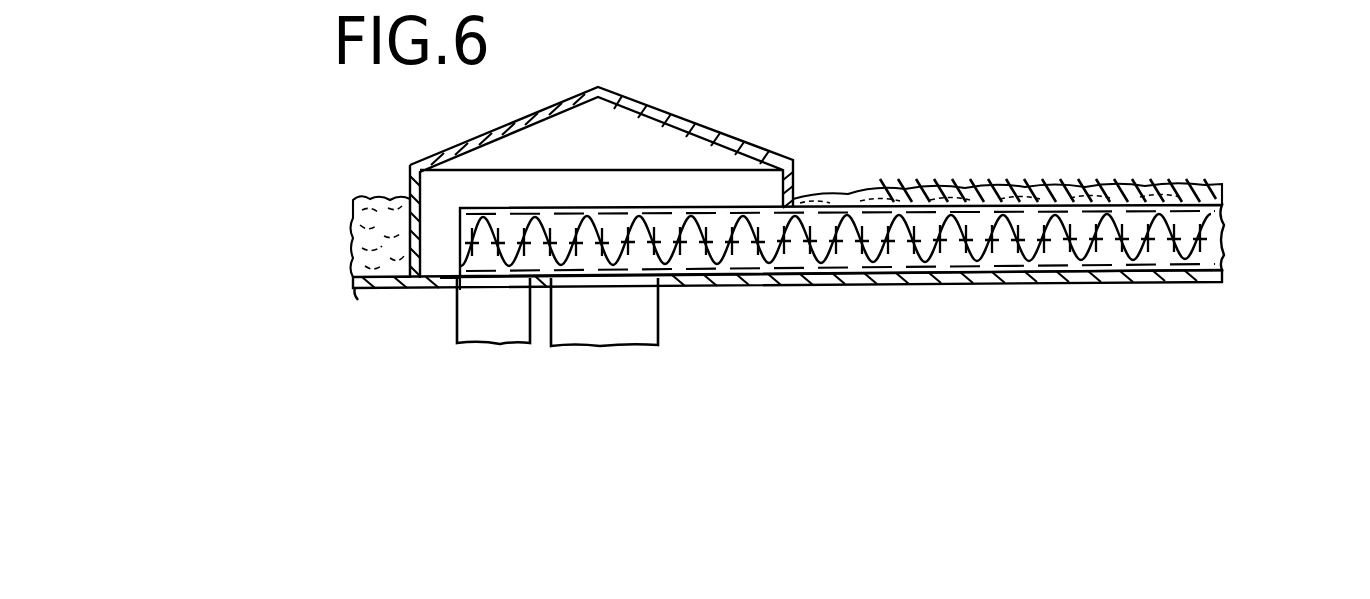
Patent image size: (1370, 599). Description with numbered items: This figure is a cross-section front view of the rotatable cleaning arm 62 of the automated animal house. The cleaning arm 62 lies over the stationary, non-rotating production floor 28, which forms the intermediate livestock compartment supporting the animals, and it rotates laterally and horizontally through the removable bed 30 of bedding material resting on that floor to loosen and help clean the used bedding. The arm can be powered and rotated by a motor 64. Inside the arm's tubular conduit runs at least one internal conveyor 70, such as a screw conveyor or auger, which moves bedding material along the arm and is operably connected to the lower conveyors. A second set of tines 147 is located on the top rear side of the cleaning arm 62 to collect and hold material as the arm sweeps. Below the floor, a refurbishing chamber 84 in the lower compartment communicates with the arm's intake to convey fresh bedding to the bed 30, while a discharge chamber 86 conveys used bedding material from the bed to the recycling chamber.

The motor 64 is at (648, 106).
The removable bed of bedding material 30 is at (355, 222).
The production floor 28 is at (1212, 267).
The cleaning arm 62 is at (1030, 266).
The internal conveyor 70 is at (816, 249).
The second set of tines 147 is at (1199, 178).
The refurbishing chamber 84 is at (659, 320).
The discharge chamber 86 is at (453, 278).